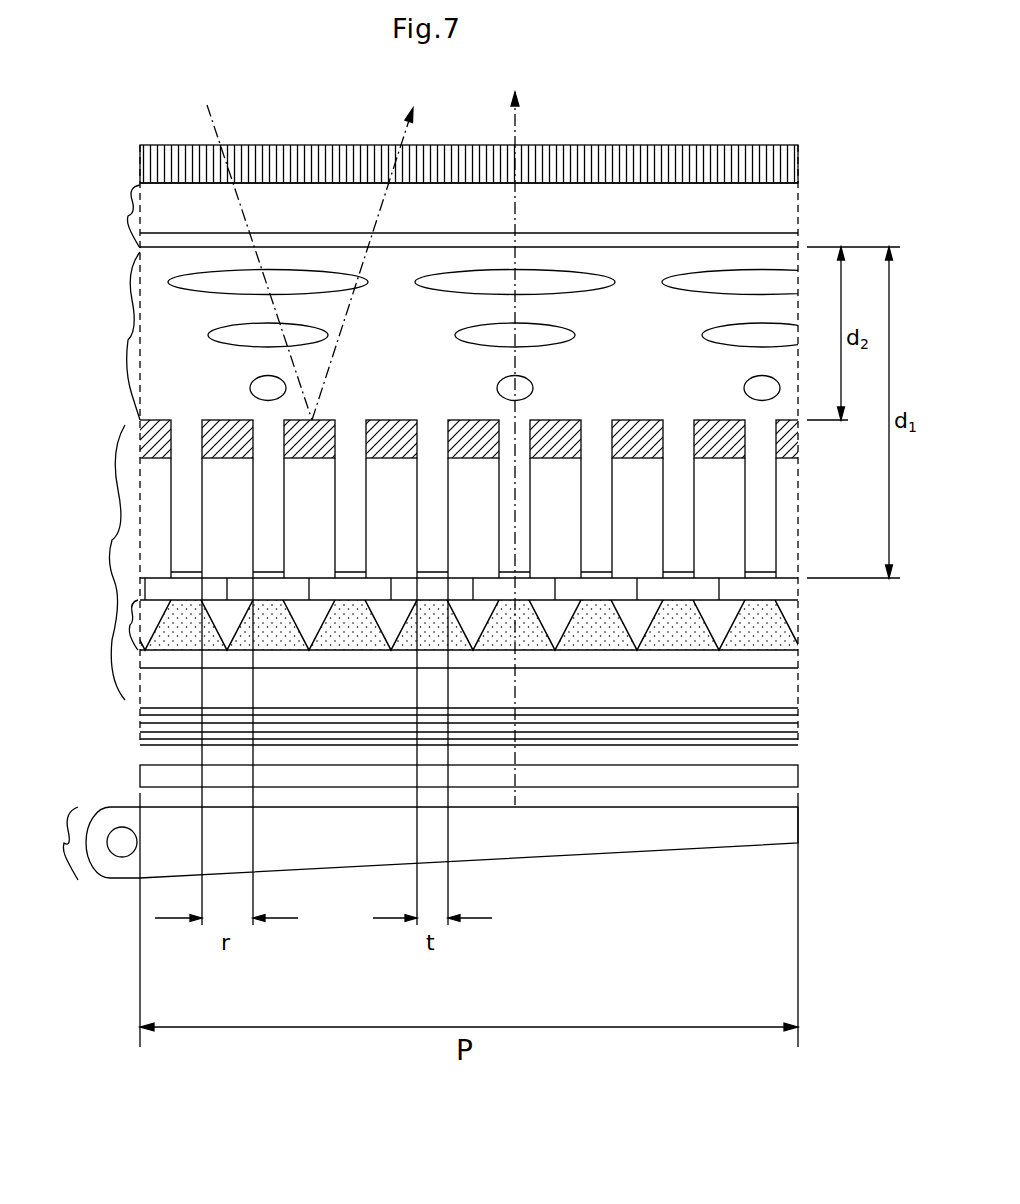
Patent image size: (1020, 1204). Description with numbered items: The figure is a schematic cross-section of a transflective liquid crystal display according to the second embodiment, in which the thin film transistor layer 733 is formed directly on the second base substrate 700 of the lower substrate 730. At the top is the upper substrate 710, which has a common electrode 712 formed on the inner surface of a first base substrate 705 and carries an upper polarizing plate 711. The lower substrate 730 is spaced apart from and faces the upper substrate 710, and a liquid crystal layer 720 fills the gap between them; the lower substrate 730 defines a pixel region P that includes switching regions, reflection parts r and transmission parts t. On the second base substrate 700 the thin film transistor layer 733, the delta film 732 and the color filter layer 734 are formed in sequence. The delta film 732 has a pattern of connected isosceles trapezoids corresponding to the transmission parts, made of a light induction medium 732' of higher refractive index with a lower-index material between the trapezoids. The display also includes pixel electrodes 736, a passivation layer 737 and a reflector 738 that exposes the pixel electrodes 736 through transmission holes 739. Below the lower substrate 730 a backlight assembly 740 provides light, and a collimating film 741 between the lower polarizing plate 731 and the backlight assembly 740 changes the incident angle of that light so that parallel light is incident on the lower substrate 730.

The second base substrate 700 is at (796, 692).
The first base substrate 705 is at (798, 210).
The upper substrate 710 is at (489, 191).
The polarizing plate 711 is at (790, 158).
The common electrode 712 is at (790, 240).
The liquid crystal layer 720 is at (452, 341).
The lower substrate 730 is at (465, 583).
The lower polarizing plate 731 is at (778, 726).
The delta film 732 is at (438, 652).
The light induction medium 732' is at (175, 671).
The thin film transistor layer 733 is at (796, 660).
The color filter layer 734 is at (797, 588).
The pixel electrodes 736 is at (758, 574).
The passivation layer 737 is at (218, 520).
The reflector 738 is at (222, 450).
The transmission holes 739 is at (185, 430).
The backlight assembly 740 is at (410, 843).
The collimating film 741 is at (790, 778).